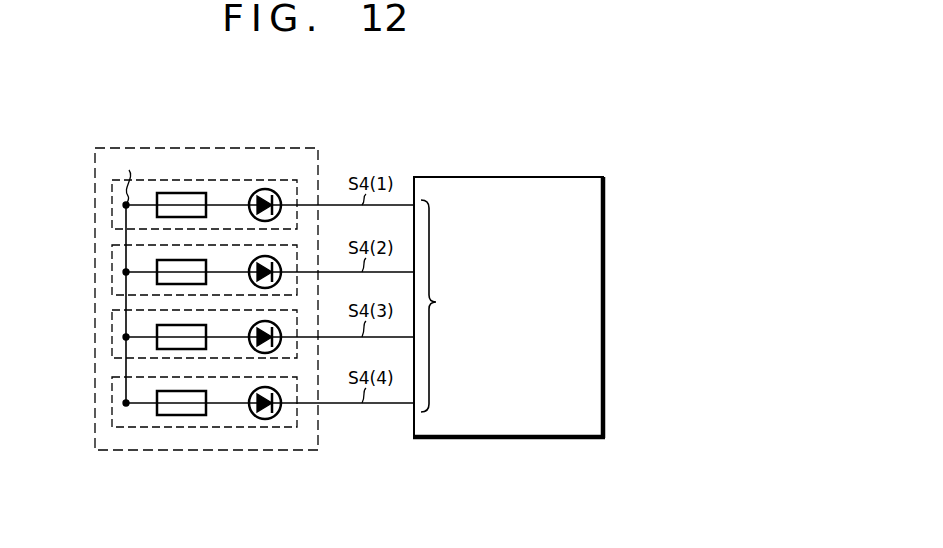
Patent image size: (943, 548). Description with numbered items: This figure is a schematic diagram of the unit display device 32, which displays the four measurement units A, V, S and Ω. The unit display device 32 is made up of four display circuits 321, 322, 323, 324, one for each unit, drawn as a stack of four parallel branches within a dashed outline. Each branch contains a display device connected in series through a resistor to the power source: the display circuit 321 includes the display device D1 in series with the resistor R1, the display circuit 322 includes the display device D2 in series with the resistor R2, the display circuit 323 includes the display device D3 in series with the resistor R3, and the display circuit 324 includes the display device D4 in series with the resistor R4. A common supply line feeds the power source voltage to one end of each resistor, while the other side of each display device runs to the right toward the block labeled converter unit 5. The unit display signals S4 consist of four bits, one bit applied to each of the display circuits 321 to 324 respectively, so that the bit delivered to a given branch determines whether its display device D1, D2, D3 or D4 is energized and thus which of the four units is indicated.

The unit display device 32 is at (189, 147).
The display circuit 321 is at (110, 205).
The display circuit 322 is at (110, 272).
The display circuit 323 is at (110, 337).
The display circuit 324 is at (110, 403).
The converter unit 5 is at (572, 194).
The resistor R1 is at (181, 205).
The resistor R2 is at (181, 272).
The resistor R3 is at (181, 337).
The resistor R4 is at (181, 403).
The display device D1 is at (254, 199).
The display device D2 is at (254, 266).
The display device D3 is at (254, 331).
The display device D4 is at (254, 397).
The unit display signals S4 is at (442, 306).